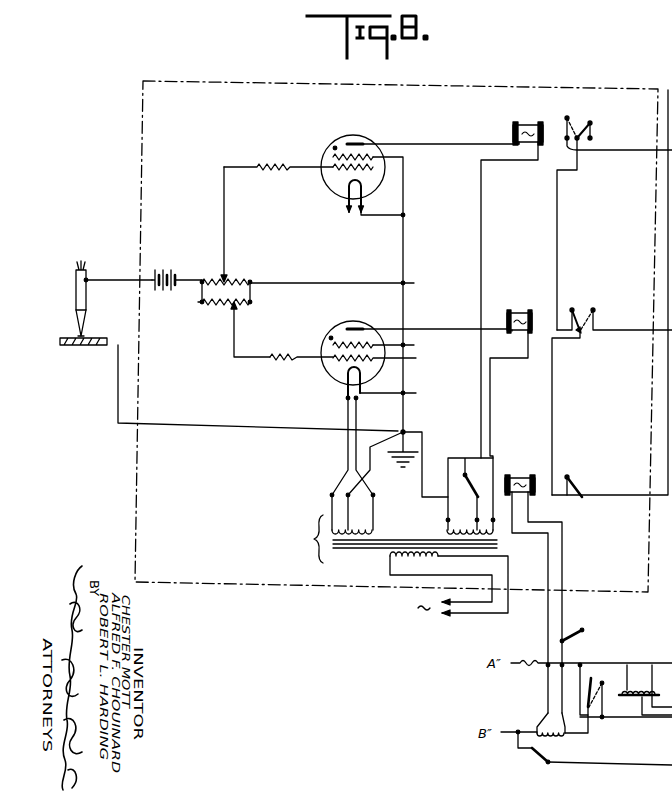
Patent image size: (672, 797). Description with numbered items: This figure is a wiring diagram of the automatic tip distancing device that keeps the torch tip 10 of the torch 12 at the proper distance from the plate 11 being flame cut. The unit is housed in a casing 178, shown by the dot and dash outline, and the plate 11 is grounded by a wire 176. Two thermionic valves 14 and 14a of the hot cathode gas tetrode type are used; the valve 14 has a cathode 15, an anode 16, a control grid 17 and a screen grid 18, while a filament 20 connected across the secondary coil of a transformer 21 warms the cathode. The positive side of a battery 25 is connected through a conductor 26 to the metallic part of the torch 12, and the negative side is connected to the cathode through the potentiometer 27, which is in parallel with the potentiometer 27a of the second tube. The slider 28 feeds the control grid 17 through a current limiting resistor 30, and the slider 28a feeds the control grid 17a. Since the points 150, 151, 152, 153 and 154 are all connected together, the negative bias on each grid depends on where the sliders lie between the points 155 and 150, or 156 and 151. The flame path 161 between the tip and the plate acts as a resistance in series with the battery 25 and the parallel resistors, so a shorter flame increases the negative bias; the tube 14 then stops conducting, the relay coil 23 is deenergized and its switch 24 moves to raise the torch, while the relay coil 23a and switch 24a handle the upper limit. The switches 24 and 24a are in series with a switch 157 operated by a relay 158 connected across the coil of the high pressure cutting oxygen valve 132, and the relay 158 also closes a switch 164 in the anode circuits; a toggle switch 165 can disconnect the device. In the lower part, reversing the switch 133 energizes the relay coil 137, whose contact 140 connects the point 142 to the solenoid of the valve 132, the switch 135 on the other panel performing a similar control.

The torch tip 10 is at (84, 324).
The plate 11 is at (75, 348).
The torch 12 is at (87, 292).
The thermionic valve 14 is at (320, 374).
The thermionic valve 14a is at (375, 138).
The cathode 15 is at (345, 380).
The anode 16 is at (357, 326).
The control grid 17 is at (410, 358).
The control grid 17a is at (336, 163).
The screen grid 18 is at (331, 346).
The filament 20 is at (349, 393).
The transformer 21 is at (401, 419).
The relay coil 23 is at (514, 313).
The relay coil 23a is at (528, 125).
The switch 24 is at (578, 308).
The switch 24a is at (593, 125).
The battery 25 is at (161, 268).
The conductor 26 is at (111, 280).
The potentiometer 27 is at (219, 306).
The potentiometer 27a is at (240, 280).
The slider 28 is at (237, 312).
The slider 28a is at (226, 274).
The current limiting resistor 30 is at (280, 360).
The high pressure cutting oxygen valve 132 is at (555, 739).
The switch 133 is at (665, 748).
The switch 135 is at (670, 745).
The relay coil 137 is at (641, 700).
The contact 140 is at (593, 678).
The point 142 is at (581, 664).
The point 150 is at (251, 303).
The point 151 is at (262, 283).
The point 152 is at (406, 286).
The point 153 is at (406, 348).
The cathode terminal connection 154 is at (406, 396).
The point 155 is at (201, 303).
The point 156 is at (202, 280).
The switch 157 is at (583, 486).
The relay 158 is at (521, 478).
The flame path 161 is at (85, 337).
The switch 164 is at (470, 480).
The switch 165 is at (585, 629).
The wire 176 is at (118, 396).
The casing 178 is at (622, 89).